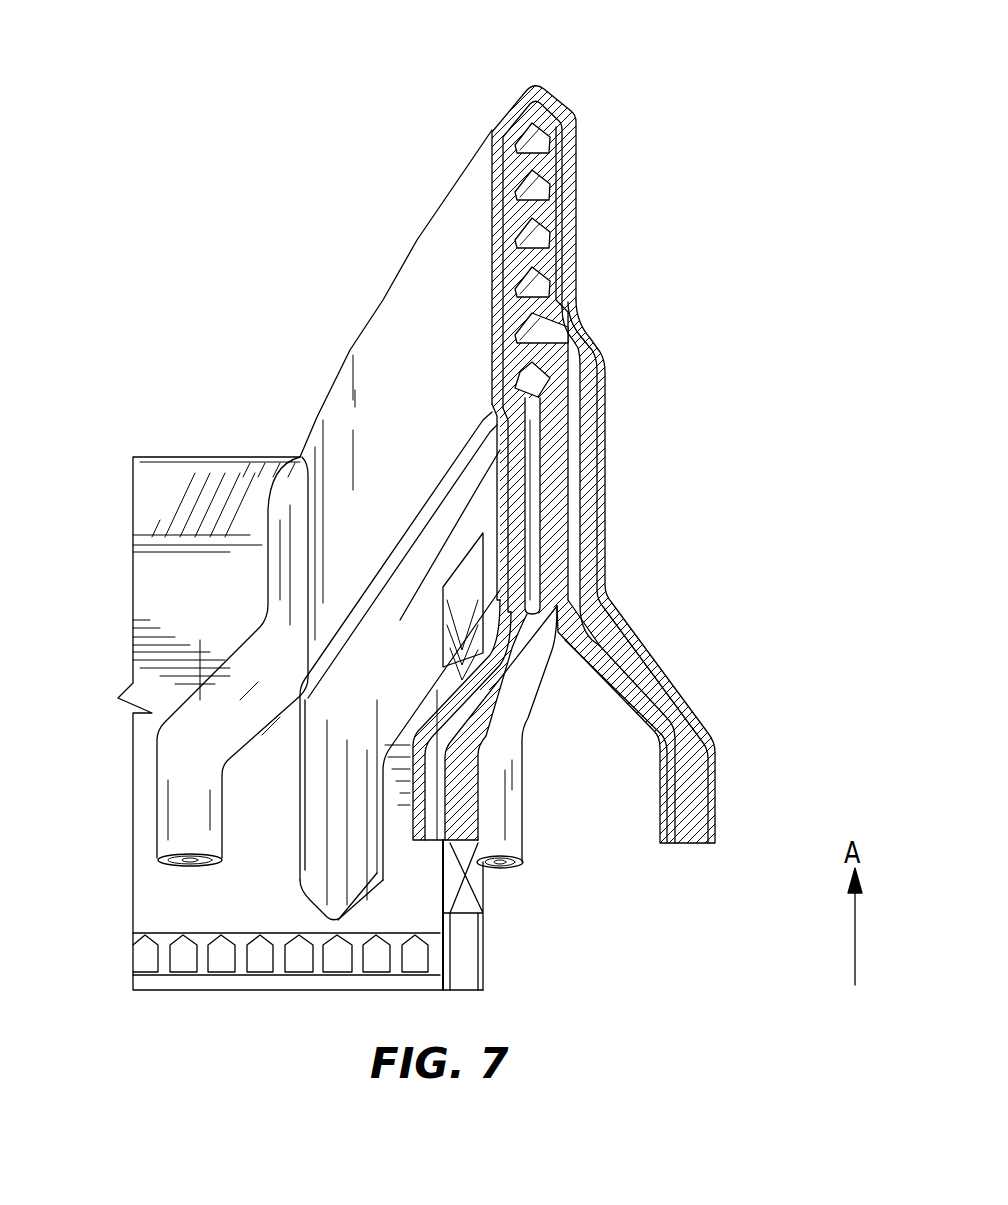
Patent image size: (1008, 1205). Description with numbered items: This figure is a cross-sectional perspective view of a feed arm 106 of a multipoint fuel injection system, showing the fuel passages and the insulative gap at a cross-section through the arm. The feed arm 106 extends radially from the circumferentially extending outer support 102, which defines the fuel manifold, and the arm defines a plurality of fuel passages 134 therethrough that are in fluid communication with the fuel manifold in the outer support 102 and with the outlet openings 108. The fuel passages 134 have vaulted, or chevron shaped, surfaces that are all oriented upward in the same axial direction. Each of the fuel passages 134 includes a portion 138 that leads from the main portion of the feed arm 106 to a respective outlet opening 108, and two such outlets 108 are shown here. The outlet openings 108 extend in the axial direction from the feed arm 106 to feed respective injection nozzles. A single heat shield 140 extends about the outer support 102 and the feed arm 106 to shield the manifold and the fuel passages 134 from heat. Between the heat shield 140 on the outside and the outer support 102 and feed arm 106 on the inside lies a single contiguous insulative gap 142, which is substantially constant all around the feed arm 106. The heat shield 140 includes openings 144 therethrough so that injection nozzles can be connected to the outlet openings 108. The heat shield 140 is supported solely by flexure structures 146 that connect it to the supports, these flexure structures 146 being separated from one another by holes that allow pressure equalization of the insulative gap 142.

The outer support 102 is at (170, 498).
The feed arm 106 is at (360, 357).
The outlet openings 108 is at (165, 860).
The fuel passages 134 is at (537, 148).
The portion of fuel passage 138 is at (575, 398).
The heat shield 140 is at (517, 100).
The insulative gap 142 is at (552, 110).
The openings 144 is at (485, 852).
The flexure structures 146 is at (277, 950).